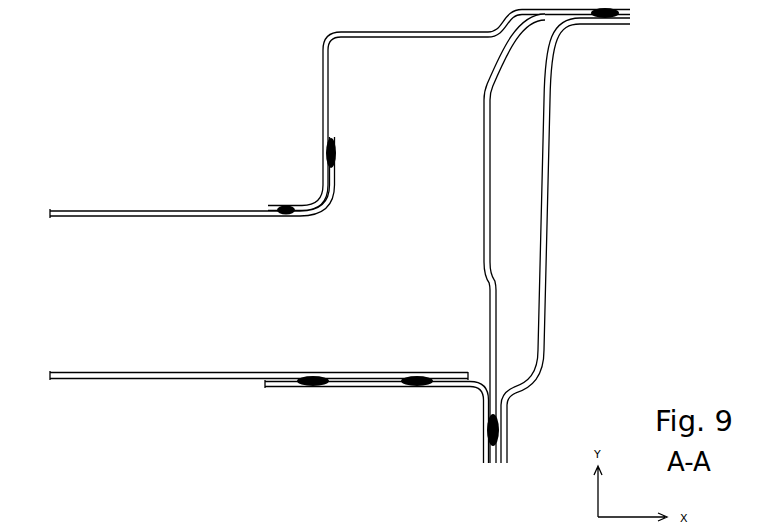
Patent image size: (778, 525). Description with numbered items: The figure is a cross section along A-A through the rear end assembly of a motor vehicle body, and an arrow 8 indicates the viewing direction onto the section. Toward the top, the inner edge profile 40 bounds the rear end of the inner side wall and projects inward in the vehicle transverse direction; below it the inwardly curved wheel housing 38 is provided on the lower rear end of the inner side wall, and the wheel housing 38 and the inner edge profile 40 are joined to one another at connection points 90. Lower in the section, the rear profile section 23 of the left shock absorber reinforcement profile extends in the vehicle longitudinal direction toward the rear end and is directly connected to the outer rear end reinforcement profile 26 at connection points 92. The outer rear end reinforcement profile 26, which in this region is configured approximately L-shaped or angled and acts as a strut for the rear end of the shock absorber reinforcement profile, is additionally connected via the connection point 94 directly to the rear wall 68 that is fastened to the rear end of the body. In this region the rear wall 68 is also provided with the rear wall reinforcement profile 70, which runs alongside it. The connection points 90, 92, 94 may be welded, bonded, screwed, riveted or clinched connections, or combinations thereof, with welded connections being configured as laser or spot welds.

The vehicle body structure 8 is at (599, 145).
The rear profile section 23 is at (92, 378).
The outer rear end reinforcement profile 26 is at (359, 387).
The wheel housing 38 is at (95, 217).
The inner edge profile 40 is at (378, 37).
The rear wall 68 is at (483, 172).
The rear wall reinforcement profile 70 is at (537, 236).
The connection point 90 is at (323, 158).
The connection point 92 is at (310, 388).
The connection point 94 is at (500, 430).